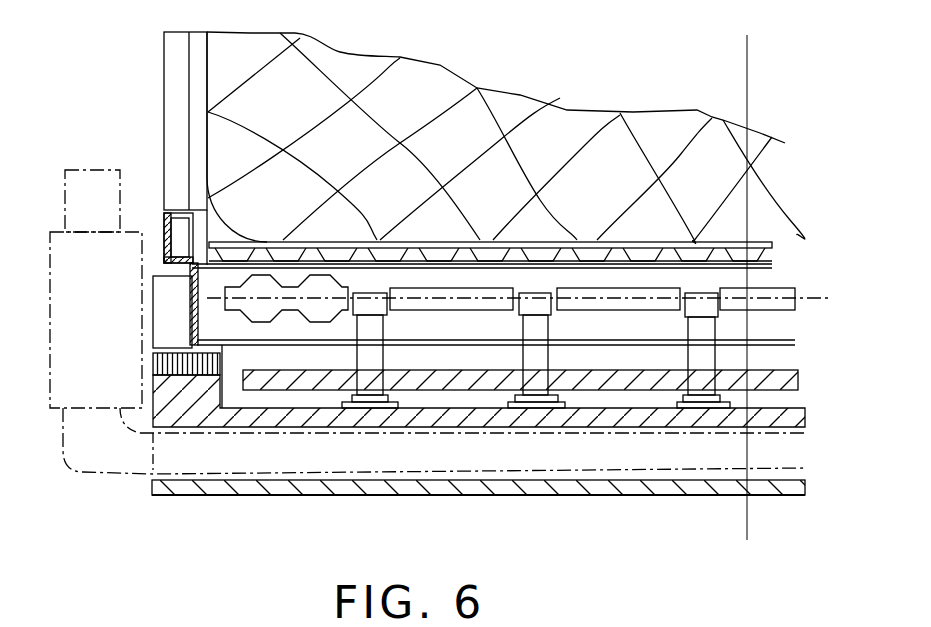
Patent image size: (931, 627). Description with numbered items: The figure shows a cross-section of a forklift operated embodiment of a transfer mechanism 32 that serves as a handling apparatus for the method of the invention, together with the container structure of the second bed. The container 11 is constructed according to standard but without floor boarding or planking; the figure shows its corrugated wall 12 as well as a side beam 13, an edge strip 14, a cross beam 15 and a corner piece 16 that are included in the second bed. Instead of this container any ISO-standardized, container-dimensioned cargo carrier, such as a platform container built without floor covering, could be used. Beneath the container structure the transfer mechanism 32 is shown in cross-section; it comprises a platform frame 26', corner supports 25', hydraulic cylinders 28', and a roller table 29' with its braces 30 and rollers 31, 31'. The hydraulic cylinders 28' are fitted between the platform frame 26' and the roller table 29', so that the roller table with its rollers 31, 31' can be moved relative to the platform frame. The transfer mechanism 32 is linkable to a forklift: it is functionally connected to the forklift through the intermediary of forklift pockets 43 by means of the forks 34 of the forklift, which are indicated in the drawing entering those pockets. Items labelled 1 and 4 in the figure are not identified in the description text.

The cover plate 1 is at (730, 243).
The concrete slab 4 is at (433, 88).
The container 11 is at (162, 84).
The corrugated wall 12 is at (178, 122).
The side beam 13 is at (188, 305).
The edge strip 14 is at (187, 235).
The cross beam 15 is at (728, 282).
The corner piece 16 is at (165, 332).
The corner supports 25' is at (227, 360).
The platform frame 26' is at (478, 521).
The hydraulic cylinders 28' is at (536, 431).
The roller table 29' is at (520, 419).
The braces 30 is at (375, 332).
The rollers 31 is at (620, 310).
The rollers 31' is at (305, 295).
The transfer mechanism 32 is at (284, 490).
The forks 34 is at (83, 450).
The forklift pockets 43 is at (168, 462).